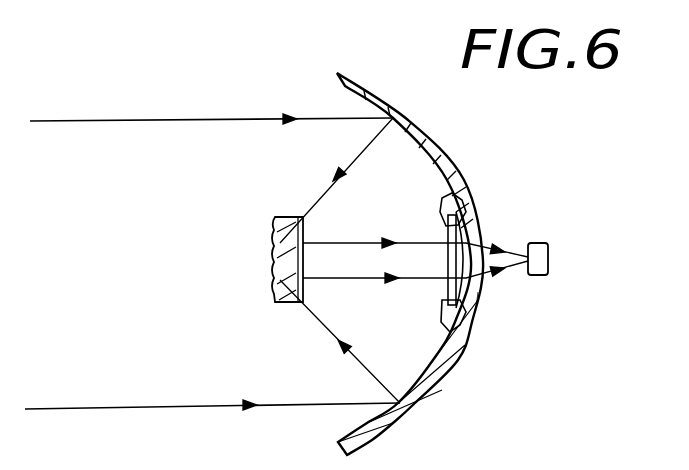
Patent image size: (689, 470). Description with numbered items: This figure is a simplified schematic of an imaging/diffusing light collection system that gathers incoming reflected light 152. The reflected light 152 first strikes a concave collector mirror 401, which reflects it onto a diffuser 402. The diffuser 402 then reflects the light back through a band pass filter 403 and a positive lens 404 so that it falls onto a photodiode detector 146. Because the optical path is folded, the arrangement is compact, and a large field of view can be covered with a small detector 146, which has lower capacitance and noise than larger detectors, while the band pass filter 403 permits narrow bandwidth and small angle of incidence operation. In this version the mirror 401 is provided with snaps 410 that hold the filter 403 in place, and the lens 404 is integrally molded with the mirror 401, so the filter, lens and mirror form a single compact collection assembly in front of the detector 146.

The photodiode detector 146 is at (550, 256).
The reflected light 152 is at (248, 112).
The concave collector mirror 401 is at (447, 149).
The diffuser 402 is at (305, 232).
The band pass filter 403 is at (466, 226).
The positive lens 404 is at (478, 298).
The snaps 410 is at (443, 210).